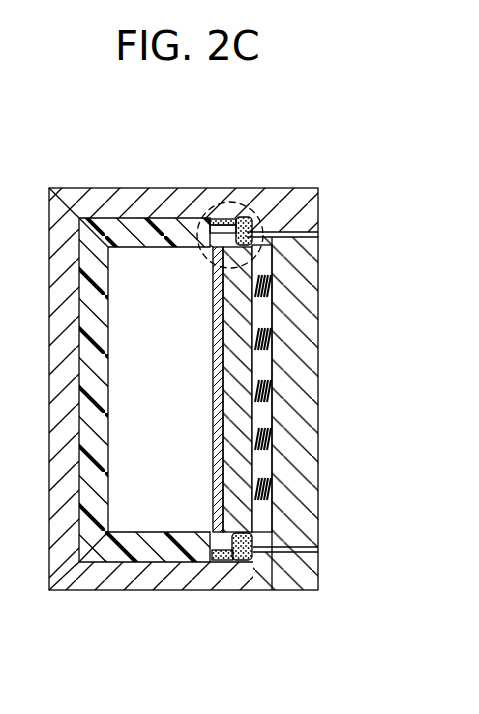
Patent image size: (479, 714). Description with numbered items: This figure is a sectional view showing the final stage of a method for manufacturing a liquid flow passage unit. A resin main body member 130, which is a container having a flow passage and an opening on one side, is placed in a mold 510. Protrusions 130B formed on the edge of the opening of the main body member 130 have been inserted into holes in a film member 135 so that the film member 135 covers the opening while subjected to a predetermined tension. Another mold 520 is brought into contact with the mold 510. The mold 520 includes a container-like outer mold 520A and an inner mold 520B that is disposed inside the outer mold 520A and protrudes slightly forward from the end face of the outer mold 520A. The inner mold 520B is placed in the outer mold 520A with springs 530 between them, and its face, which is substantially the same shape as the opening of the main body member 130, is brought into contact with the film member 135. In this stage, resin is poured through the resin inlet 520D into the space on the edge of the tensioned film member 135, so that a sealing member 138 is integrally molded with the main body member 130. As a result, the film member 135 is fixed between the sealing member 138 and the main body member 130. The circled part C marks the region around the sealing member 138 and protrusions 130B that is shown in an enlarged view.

The mold 510 is at (153, 578).
The main body member 130 is at (93, 553).
The protrusions 130B is at (240, 223).
The film member 135 is at (221, 360).
The sealing member 138 is at (258, 226).
The mold 520 is at (337, 409).
The outer mold 520A is at (305, 284).
The inner mold 520B is at (244, 328).
The resin inlet 520D is at (300, 233).
The springs 530 is at (263, 440).
The part C is at (229, 202).